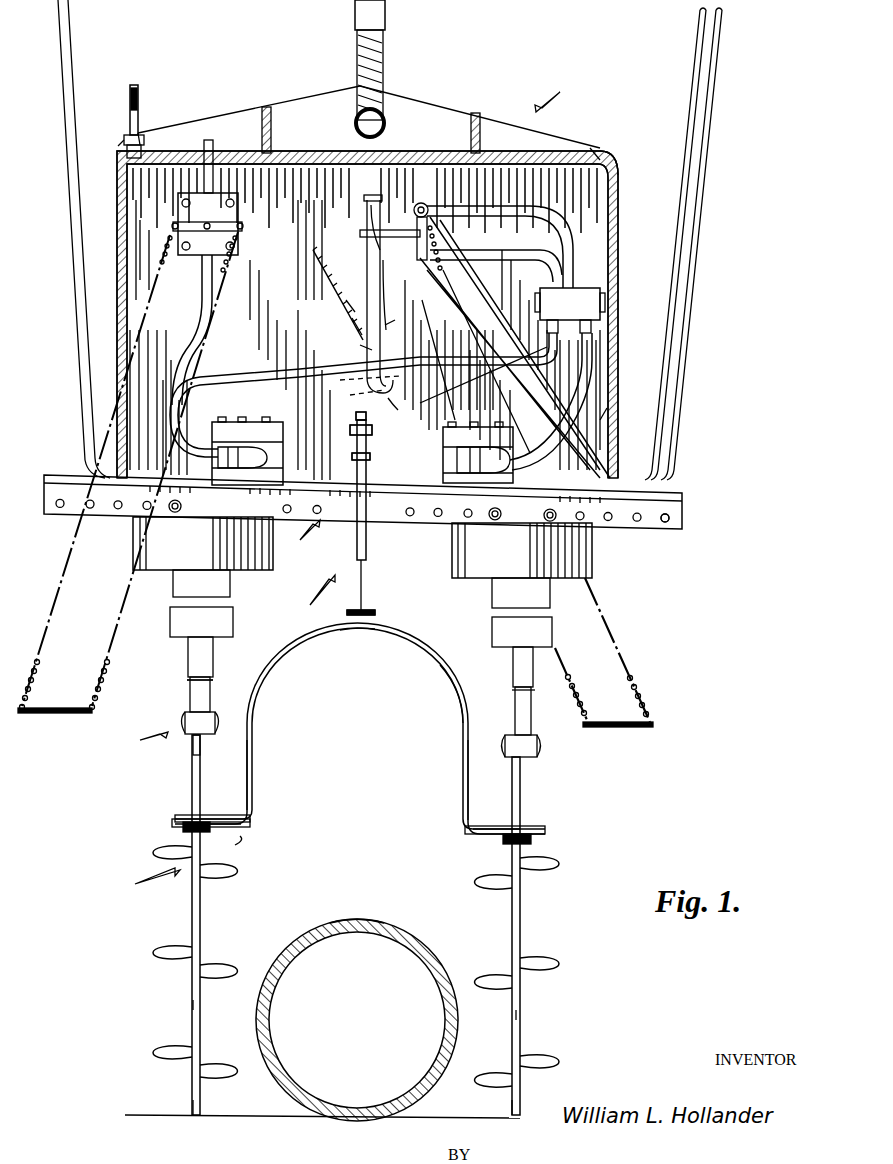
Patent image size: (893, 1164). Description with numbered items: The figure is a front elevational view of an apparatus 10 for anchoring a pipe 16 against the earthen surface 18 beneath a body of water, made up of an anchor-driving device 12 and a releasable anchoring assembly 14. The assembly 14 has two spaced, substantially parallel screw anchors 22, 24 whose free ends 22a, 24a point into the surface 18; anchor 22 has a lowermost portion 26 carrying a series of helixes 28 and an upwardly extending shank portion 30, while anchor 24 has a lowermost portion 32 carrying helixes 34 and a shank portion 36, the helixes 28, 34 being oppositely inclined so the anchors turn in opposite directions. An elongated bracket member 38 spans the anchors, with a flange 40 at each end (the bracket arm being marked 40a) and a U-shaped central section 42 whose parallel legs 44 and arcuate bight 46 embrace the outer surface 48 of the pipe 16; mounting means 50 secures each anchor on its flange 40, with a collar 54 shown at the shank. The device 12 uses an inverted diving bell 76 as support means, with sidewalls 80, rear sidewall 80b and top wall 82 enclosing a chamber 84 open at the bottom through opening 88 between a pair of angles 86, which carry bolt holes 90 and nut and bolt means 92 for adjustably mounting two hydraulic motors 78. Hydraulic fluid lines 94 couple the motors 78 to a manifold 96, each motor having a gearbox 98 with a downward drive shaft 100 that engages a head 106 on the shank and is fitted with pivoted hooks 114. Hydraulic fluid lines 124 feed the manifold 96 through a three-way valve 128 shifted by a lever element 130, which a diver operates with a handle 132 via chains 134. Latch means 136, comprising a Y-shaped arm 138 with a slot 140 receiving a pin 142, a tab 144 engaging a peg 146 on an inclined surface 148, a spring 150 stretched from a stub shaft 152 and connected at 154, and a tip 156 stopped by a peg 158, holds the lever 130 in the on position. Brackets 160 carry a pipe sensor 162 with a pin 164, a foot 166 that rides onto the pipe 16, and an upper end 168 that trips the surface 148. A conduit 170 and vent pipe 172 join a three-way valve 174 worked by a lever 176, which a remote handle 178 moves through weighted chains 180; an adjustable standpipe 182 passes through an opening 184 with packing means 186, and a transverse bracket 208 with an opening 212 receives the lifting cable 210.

The apparatus 10 is at (352, 414).
The anchor-driving device 12 is at (313, 592).
The anchoring assembly 14 is at (147, 882).
The pipe 16 is at (410, 930).
The earthen surface 18 is at (236, 1120).
The screw anchor 22 is at (192, 797).
The free end of anchor 22a is at (192, 1108).
The screw anchor 24 is at (522, 801).
The free end of anchor 24a is at (505, 1115).
The lowermost portion 26 is at (192, 1003).
The helixes 28 is at (158, 852).
The shank portion 30 is at (192, 752).
The lowermost portion 32 is at (522, 1015).
The helixes 34 is at (563, 872).
The shank portion 36 is at (528, 760).
The bracket member 38 is at (340, 642).
The flange 40 is at (245, 824).
The bracket arm 40a is at (228, 818).
The U-shaped central section 42 is at (450, 672).
The legs 44 is at (250, 778).
The arcuate bight 46 is at (370, 630).
The outer surface 48 is at (362, 918).
The mounting means 50 is at (150, 812).
The collar 54 is at (241, 846).
The inverted diving bell 76 is at (262, 80).
The hydraulically actuated motors 78 is at (282, 422).
The sidewalls 80 is at (418, 170).
The rear sidewall 80b is at (607, 408).
The top wall 82 is at (598, 150).
The chamber 84 is at (616, 172).
The angles 86 is at (685, 512).
The opening 88 is at (305, 540).
The bolt holes 90 is at (668, 523).
The nut and bolt means 92 is at (593, 541).
The hydraulic fluid lines 94 is at (232, 375).
The manifold 96 is at (600, 292).
The gearbox 98 is at (133, 560).
The drive shaft 100 is at (193, 668).
The head 106 is at (205, 740).
The hooks 114 is at (186, 716).
The hydraulic fluid lines 124 is at (694, 70).
The 3-way valve 128 is at (432, 208).
The lever element 130 is at (402, 232).
The handle 132 is at (630, 728).
The chains 134 is at (583, 702).
The latch means 136 is at (345, 322).
The Y-shaped arm 138 is at (370, 258).
The slot 140 is at (366, 200).
The pin 142 is at (366, 225).
The tab 144 is at (358, 348).
The peg 146 is at (352, 396).
The inclined surface 148 is at (340, 380).
The spring 150 is at (350, 300).
The stub shaft 152 is at (308, 252).
The spring connection 154 is at (378, 322).
The tip 156 is at (376, 403).
The peg 158 is at (412, 352).
The brackets 160 is at (352, 456).
The pipe sensor 162 is at (367, 549).
The pin 164 is at (372, 432).
The foot 166 is at (368, 612).
The upper end of sensor 168 is at (352, 418).
The conduit 170 is at (78, 300).
The vent pipe 172 is at (214, 150).
The 3-way valve 174 is at (216, 203).
The lever 176 is at (182, 222).
The handle 178 is at (56, 715).
The weighted chains 180 is at (112, 610).
The standpipe 182 is at (140, 100).
The opening 184 is at (122, 140).
The packing means 186 is at (142, 135).
The transverse bracket 208 is at (480, 125).
The cable 210 is at (385, 52).
The opening 212 is at (356, 120).